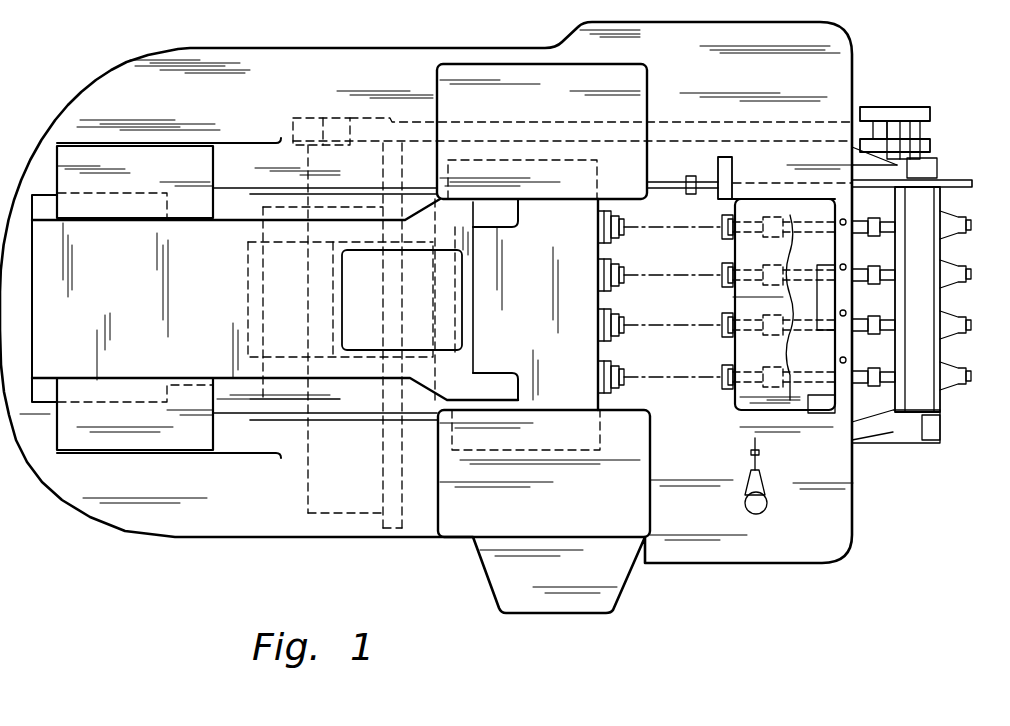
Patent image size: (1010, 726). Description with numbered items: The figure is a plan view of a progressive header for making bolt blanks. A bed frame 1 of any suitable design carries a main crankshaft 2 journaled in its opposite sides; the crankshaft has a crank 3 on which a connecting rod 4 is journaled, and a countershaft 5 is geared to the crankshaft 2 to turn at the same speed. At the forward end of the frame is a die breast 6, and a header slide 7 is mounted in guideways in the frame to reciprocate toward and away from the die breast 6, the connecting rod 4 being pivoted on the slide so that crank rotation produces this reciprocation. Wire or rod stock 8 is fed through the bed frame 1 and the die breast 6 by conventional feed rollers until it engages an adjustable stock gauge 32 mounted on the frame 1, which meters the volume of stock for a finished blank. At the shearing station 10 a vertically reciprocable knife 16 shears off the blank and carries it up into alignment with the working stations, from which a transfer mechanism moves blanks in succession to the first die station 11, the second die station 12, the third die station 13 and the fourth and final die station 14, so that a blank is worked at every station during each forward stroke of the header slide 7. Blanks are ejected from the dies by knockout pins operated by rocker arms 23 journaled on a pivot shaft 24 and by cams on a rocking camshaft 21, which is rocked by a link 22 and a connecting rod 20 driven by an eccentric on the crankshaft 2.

The bed frame 1 is at (434, 48).
The main crankshaft 2 is at (307, 482).
The crank 3 is at (250, 238).
The connecting rod 4 is at (247, 293).
The countershaft 5 is at (402, 520).
The die breast 6 is at (740, 348).
The header slide 7 is at (594, 351).
The wire or rod stock 8 is at (958, 181).
The shearing station 10 is at (713, 200).
The first die station 11 is at (677, 228).
The second die station 12 is at (677, 276).
The third die station 13 is at (677, 326).
The fourth and final die station 14 is at (674, 378).
The vertically reciprocable knife 16 is at (734, 168).
The connecting rod 20 is at (852, 124).
The rocking camshaft 21 is at (930, 136).
The link 22 is at (909, 108).
The rocker arms 23 is at (951, 224).
The pivot shaft 24 is at (945, 303).
The adjustable stock gauge 32 is at (666, 181).